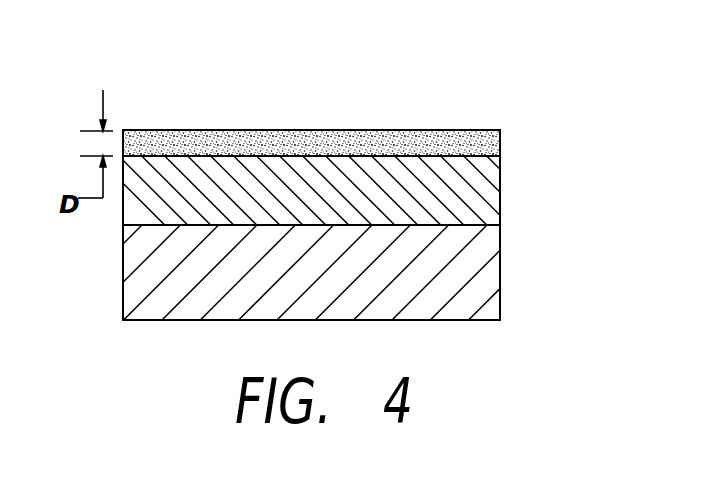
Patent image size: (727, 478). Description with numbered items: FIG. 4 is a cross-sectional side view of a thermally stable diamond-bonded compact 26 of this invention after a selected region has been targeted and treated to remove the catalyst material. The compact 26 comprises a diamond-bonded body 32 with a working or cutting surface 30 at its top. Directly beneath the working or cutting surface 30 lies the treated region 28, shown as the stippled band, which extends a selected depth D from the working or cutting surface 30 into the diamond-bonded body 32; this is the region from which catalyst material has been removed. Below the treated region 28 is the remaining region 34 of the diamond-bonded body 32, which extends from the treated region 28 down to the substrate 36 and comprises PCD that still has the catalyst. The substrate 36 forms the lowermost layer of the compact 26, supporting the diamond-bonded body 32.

The compact 26 is at (570, 163).
The treated region 28 is at (438, 141).
The working or cutting surface 30 is at (333, 131).
The diamond-bonded body 32 is at (512, 195).
The remaining region 34 is at (143, 194).
The substrate 36 is at (475, 283).